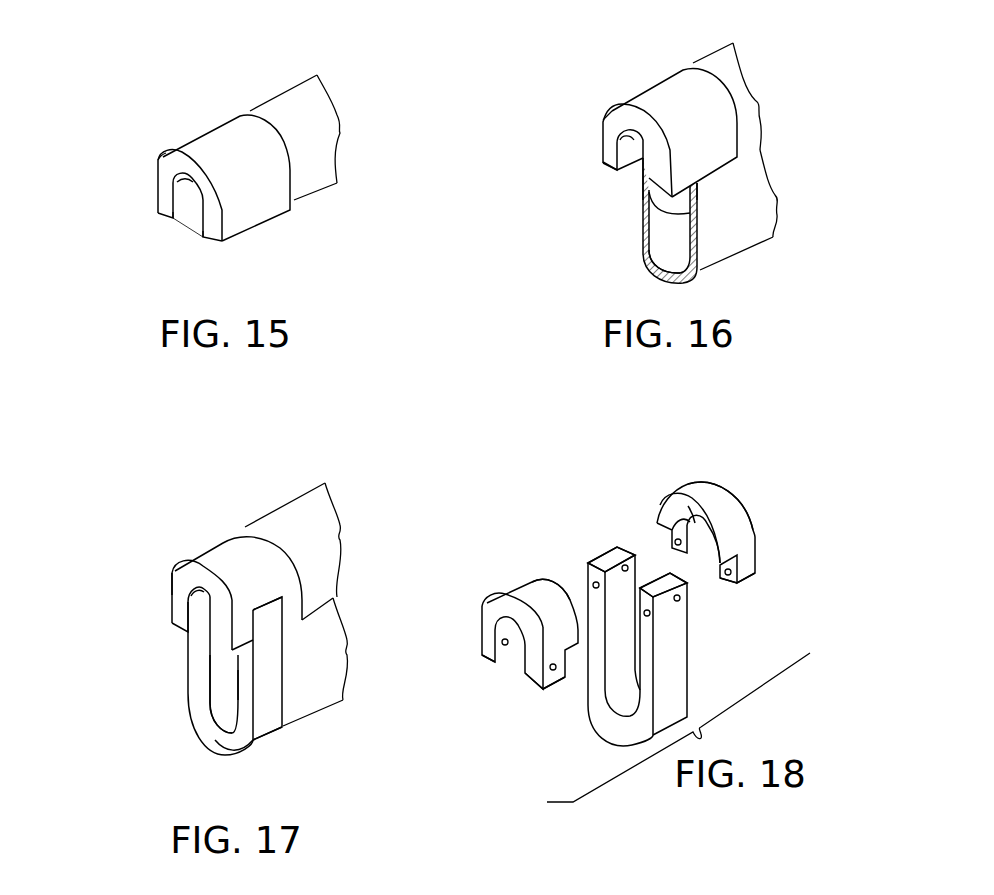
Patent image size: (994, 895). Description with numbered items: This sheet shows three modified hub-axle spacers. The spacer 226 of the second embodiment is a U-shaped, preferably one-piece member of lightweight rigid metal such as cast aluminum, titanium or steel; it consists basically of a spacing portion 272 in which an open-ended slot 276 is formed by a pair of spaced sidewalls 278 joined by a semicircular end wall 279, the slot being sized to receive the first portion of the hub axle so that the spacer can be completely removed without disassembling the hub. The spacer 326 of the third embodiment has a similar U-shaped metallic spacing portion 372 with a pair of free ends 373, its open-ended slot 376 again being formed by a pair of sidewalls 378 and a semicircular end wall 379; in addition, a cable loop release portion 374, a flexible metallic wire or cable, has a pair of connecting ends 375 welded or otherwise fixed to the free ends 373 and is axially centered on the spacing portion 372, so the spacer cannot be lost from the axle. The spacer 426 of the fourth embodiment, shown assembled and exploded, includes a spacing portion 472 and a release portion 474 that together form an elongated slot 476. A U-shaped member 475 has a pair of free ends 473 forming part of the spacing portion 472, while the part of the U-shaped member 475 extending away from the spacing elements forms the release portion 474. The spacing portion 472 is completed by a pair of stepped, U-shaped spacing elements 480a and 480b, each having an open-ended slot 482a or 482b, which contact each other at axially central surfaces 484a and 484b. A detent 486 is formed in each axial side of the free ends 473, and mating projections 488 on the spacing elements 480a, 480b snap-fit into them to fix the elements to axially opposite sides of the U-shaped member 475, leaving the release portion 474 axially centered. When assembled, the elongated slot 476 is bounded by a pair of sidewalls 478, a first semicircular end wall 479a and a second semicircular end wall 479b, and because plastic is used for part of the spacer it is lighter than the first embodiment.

In FIG. 15, the spacer 226 is at (217, 94).
In FIG. 15, the spacing portion 272 is at (318, 137).
In FIG. 15, the open-ended slot 276 is at (180, 242).
In FIG. 15, the sidewalls 278 is at (184, 198).
In FIG. 15, the semicircular end wall 279 is at (159, 160).
In FIG. 16, the spacer 326 is at (622, 76).
In FIG. 16, the spacing portion 372 is at (750, 96).
In FIG. 16, the free ends 373 is at (605, 170).
In FIG. 16, the cable loop release portion 374 is at (732, 216).
In FIG. 16, the connecting ends 375 is at (637, 165).
In FIG. 16, the open-ended slot 376 is at (630, 189).
In FIG. 16, the sidewalls 378 is at (623, 142).
In FIG. 16, the semicircular end wall 379 is at (603, 120).
In FIG. 17, the spacer 426 is at (187, 515).
In FIG. 18, the spacer 426 is at (616, 497).
In FIG. 17, the spacing portion 472 is at (236, 547).
In FIG. 17, the free ends 473 is at (188, 601).
In FIG. 18, the free ends 473 is at (640, 588).
In FIG. 17, the release portion 474 is at (245, 699).
In FIG. 17, the U-shaped member 475 is at (295, 737).
In FIG. 18, the U-shaped member 475 is at (705, 653).
In FIG. 17, the elongated slot 476 is at (222, 715).
In FIG. 17, the sidewalls 478 is at (238, 679).
In FIG. 17, the first semicircular end wall 479a is at (172, 582).
In FIG. 17, the second semicircular end wall 479b is at (228, 733).
In FIG. 17, the spacing element 480a is at (176, 555).
In FIG. 18, the spacing element 480a is at (501, 575).
In FIG. 17, the spacing element 480b is at (247, 519).
In FIG. 18, the spacing element 480b is at (758, 494).
In FIG. 18, the open-ended slot 482a is at (521, 658).
In FIG. 18, the open-ended slot 482b is at (703, 565).
In FIG. 18, the axially central surface 484a is at (556, 582).
In FIG. 18, the axially central surface 484b is at (717, 482).
In FIG. 18, the detent 486 is at (596, 589).
In FIG. 18, the mating projections 488 is at (498, 640).